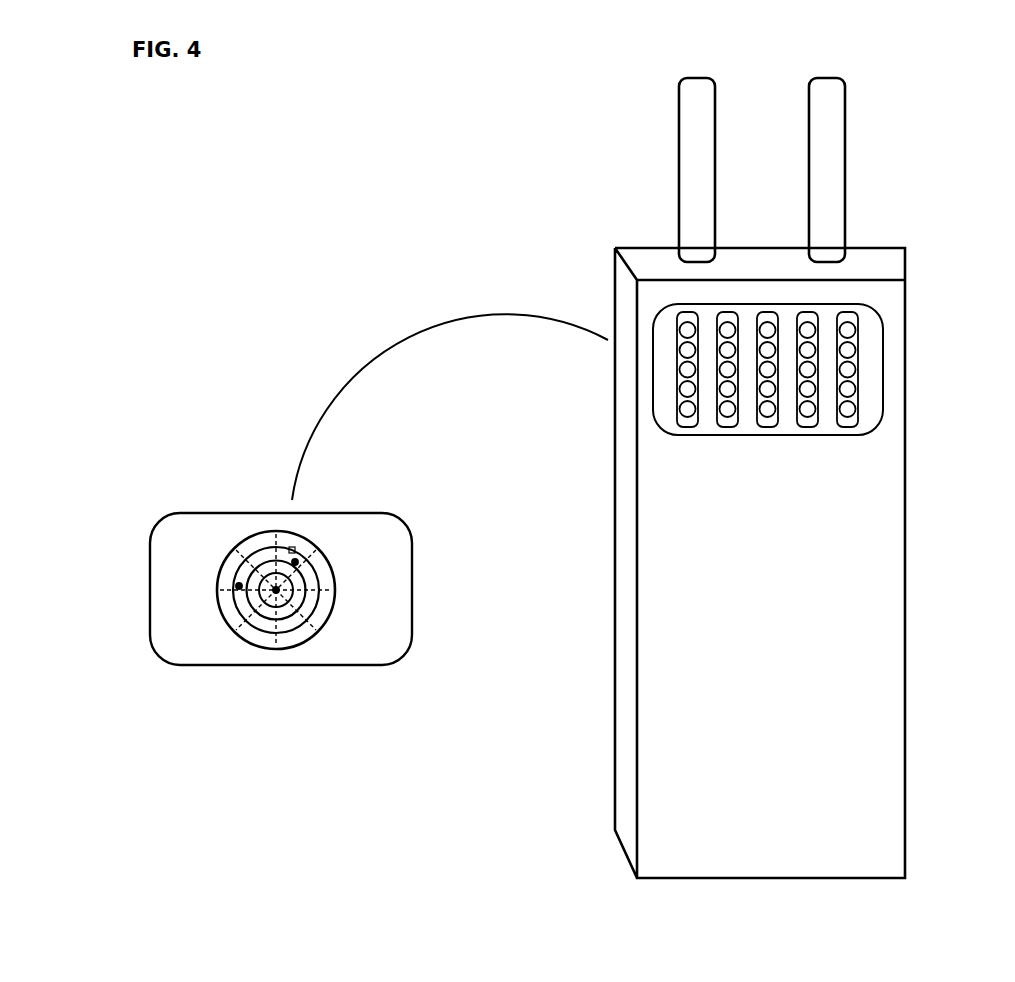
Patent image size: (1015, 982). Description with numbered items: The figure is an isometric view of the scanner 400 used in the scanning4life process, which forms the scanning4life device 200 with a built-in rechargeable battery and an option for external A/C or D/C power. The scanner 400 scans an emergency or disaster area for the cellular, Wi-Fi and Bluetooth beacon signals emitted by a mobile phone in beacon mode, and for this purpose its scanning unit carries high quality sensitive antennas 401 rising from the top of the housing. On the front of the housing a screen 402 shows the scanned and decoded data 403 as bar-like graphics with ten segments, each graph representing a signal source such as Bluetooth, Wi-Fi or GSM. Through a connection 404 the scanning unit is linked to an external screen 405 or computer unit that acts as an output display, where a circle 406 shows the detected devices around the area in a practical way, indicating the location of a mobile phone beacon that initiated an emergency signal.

The scanning4life device 200 is at (805, 467).
The scanner 400 is at (905, 246).
The antennas 401 is at (845, 105).
The screen 402 is at (858, 306).
The scanned and decoded data 403 is at (856, 417).
The connection 404 is at (417, 333).
The external screen 405 is at (402, 520).
The circle 406 is at (345, 588).